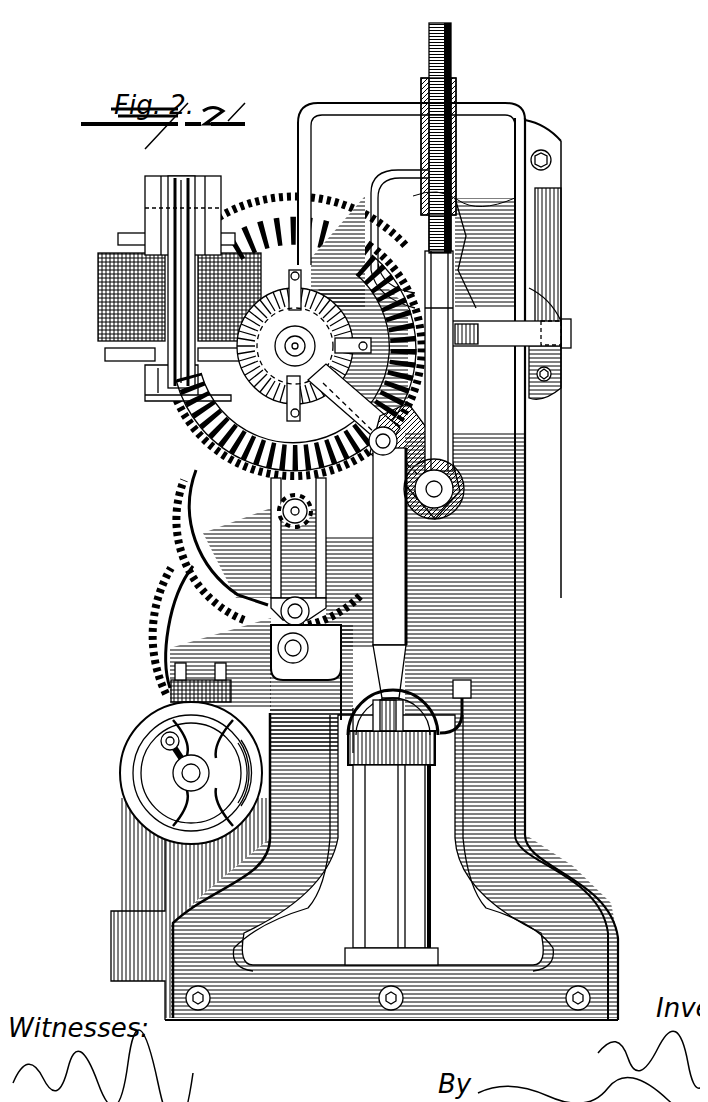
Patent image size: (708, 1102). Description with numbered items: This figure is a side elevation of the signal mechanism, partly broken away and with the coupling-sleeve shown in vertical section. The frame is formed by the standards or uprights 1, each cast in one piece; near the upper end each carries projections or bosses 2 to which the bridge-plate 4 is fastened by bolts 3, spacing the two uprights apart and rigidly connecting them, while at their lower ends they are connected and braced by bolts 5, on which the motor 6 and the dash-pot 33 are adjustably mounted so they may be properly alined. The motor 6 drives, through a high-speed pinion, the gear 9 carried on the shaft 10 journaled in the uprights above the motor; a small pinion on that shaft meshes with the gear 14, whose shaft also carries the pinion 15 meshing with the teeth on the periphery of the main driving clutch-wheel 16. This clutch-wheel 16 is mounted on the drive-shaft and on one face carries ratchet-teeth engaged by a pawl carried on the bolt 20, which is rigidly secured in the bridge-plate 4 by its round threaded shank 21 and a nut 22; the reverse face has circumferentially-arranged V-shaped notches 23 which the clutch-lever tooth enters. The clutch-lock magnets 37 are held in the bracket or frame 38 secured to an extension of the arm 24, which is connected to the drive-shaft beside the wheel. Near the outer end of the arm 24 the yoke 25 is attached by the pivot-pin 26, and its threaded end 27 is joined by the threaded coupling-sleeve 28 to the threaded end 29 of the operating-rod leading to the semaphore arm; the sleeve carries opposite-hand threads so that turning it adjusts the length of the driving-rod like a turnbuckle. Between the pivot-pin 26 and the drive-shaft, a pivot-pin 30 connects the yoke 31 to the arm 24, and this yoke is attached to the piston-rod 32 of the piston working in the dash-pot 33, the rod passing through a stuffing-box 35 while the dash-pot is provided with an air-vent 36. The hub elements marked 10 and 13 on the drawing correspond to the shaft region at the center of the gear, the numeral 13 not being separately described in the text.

The standards or uprights 1 is at (521, 572).
The projections or bosses 2 is at (545, 136).
The bolts 3 is at (543, 152).
The bridge-plate 4 is at (553, 271).
The bolts 5 is at (192, 1002).
The motor 6 is at (125, 828).
The gear 9 is at (145, 612).
The shaft 10 is at (305, 332).
The hub plate 13 is at (296, 322).
The gear 14 is at (172, 512).
The pinion 15 is at (262, 370).
The main driving clutch-wheel 16 is at (160, 412).
The bolt 20 is at (480, 322).
The round threaded shank 21 is at (565, 322).
The nut 22 is at (560, 340).
The notches 23 is at (215, 413).
The arm 24 is at (468, 488).
The yoke 25 is at (447, 378).
The pivot-pin 26 is at (384, 504).
The threaded end 27 is at (444, 232).
The threaded coupling-sleeve 28 is at (448, 88).
The threaded end 29 is at (444, 43).
The pivot-pin 30 is at (375, 433).
The yoke 31 is at (345, 600).
The piston-rod 32 is at (385, 705).
The dash-pot 33 is at (391, 865).
The stuffing-box 35 is at (354, 621).
The air-vent 36 is at (463, 680).
The clutch-lock magnets 37 is at (90, 293).
The bracket or frame 38 is at (170, 205).